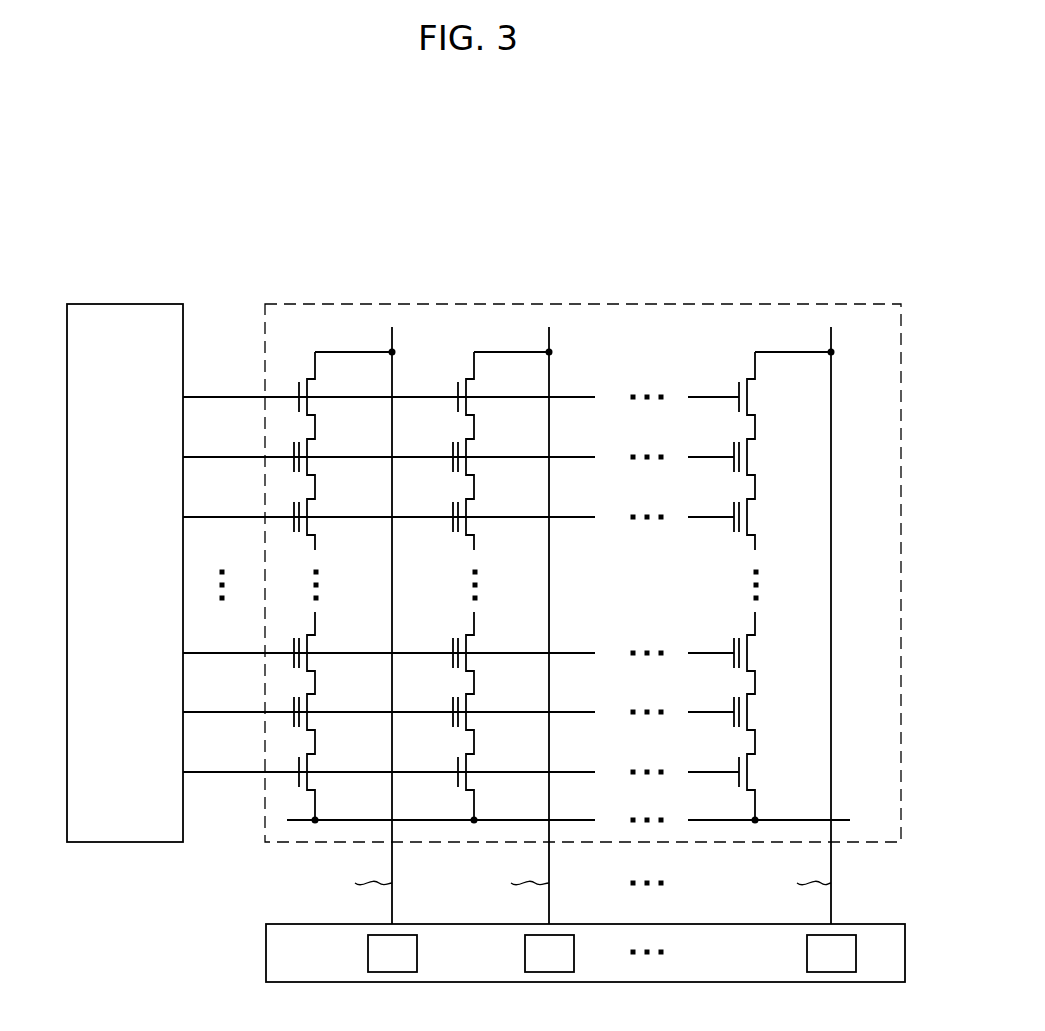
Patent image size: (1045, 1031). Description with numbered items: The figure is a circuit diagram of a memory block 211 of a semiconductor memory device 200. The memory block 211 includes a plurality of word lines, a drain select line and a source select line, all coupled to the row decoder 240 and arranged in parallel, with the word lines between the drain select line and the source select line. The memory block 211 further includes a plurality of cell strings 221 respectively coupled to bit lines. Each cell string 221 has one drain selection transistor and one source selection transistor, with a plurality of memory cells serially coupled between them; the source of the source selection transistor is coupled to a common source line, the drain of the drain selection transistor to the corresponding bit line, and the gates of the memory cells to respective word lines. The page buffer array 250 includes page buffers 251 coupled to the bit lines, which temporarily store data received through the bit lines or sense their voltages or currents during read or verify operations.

The memory device 200 is at (877, 212).
The memory block 211 is at (795, 304).
The cell string 221 is at (305, 345).
The row decoder 240 is at (125, 304).
The page buffer array 250 is at (266, 952).
The page buffer 251 is at (368, 952).